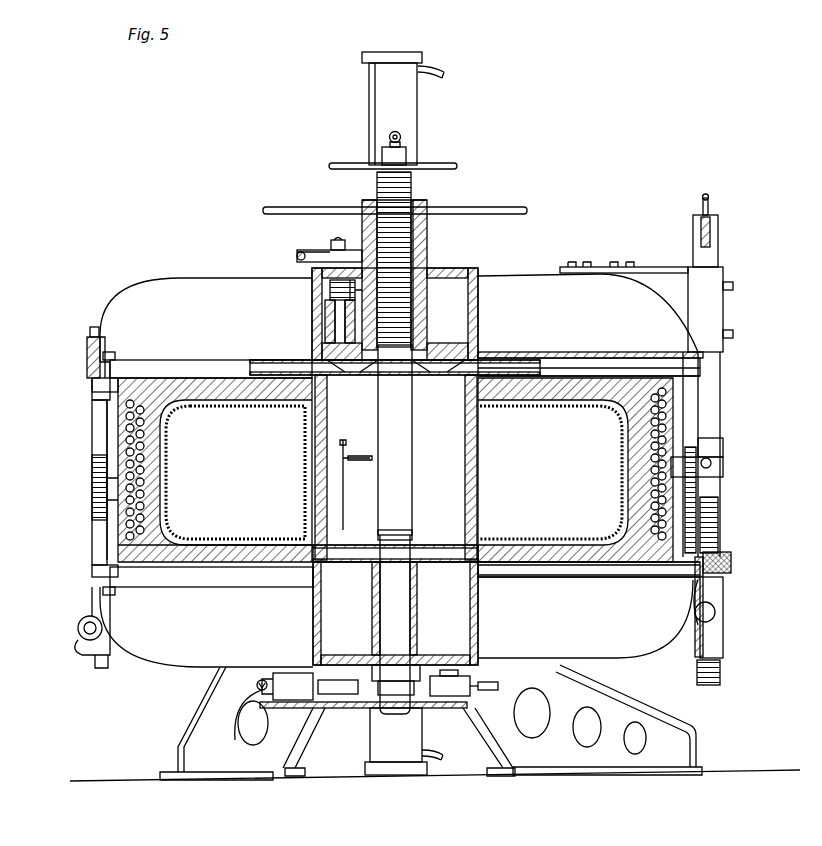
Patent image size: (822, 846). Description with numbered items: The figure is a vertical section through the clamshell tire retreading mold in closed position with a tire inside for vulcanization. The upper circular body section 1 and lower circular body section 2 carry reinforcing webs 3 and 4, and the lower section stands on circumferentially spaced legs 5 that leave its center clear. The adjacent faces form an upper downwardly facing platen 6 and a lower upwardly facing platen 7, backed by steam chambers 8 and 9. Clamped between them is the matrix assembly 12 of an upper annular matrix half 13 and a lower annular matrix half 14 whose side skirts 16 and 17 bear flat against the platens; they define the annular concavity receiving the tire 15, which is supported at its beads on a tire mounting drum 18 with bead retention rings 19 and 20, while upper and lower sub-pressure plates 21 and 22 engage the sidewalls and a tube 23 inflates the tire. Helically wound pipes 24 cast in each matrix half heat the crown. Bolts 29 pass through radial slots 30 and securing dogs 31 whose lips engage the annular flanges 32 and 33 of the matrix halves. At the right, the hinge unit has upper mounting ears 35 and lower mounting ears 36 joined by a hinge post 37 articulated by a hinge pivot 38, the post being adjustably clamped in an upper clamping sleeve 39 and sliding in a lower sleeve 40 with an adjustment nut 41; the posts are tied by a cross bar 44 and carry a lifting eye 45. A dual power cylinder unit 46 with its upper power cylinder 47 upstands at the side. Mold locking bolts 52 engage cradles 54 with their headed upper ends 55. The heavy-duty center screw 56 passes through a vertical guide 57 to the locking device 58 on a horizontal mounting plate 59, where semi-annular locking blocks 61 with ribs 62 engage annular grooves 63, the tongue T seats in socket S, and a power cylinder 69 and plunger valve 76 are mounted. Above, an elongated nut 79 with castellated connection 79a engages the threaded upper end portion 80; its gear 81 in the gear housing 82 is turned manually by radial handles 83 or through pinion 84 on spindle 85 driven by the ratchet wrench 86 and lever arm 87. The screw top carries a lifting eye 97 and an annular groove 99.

The upper circular body section 1 is at (90, 372).
The lower circular body section 2 is at (92, 586).
The reinforcing web 3 is at (205, 288).
The reinforcing web 4 is at (165, 650).
The legs 5 is at (200, 745).
The upper platen 6 is at (560, 372).
The lower platen 7 is at (625, 579).
The steam chamber 8 is at (605, 362).
The steam chamber 9 is at (585, 579).
The matrix assembly 12 is at (106, 500).
The upper annular matrix half 13 is at (126, 418).
The lower annular matrix half 14 is at (92, 522).
The tire 15 is at (630, 460).
The side skirt 16 is at (215, 380).
The side skirt 17 is at (245, 578).
The tire mounting rim or drum 18 is at (465, 452).
The bead retention ring 19 is at (325, 390).
The bead retention ring 20 is at (465, 548).
The upper sub-pressure plate 21 is at (548, 354).
The lower sub-pressure plate 22 is at (525, 579).
The tube 23 is at (500, 458).
The helically wound pipes 24 is at (170, 477).
The bolts 29 is at (115, 352).
The radial slots 30 is at (180, 360).
The securing dogs 31 is at (90, 392).
The annular flange 32 is at (700, 378).
The annular flange 33 is at (705, 530).
The upper mounting ears 35 is at (598, 267).
The lower mounting ears 36 is at (662, 668).
The hinge post 37 is at (722, 418).
The hinge pivot 38 is at (712, 463).
The upper clamping sleeve 39 is at (725, 310).
The lower sleeve 40 is at (728, 632).
The adjustment nut 41 is at (732, 562).
The cross bar 44 is at (708, 228).
The lifting eye 45 is at (710, 202).
The dual power cylinder unit 46 is at (354, 88).
The upper power cylinder 47 is at (380, 105).
The mold locking bolts 52 is at (95, 430).
The cradles 54 is at (88, 345).
The headed upper ends 55 is at (93, 326).
The center screw 56 is at (404, 412).
The vertical guide 57 is at (418, 605).
The locking device 58 is at (343, 736).
The horizontal mounting plate 59 is at (252, 742).
The semi-annular locking blocks 61 is at (438, 700).
The semi-annular ribs 62 is at (478, 684).
The annular grooves 63 is at (402, 678).
The power cylinder 69 is at (290, 700).
The plunger valve 76 is at (256, 690).
The elongated nut 79 is at (427, 212).
The castellated connection 79a is at (433, 262).
The threaded upper end portion 80 is at (377, 195).
The gear 81 is at (330, 320).
The gear housing 82 is at (470, 300).
The radial handles 83 is at (522, 207).
The pinion 84 is at (330, 290).
The vertical spindle 85 is at (297, 257).
The box-type ratchet wrench 86 is at (322, 245).
The radial lever arm 87 is at (297, 252).
The lifting eye 97 is at (400, 134).
The annular groove 99 is at (412, 533).
The socket S is at (432, 745).
The tongue T is at (395, 712).